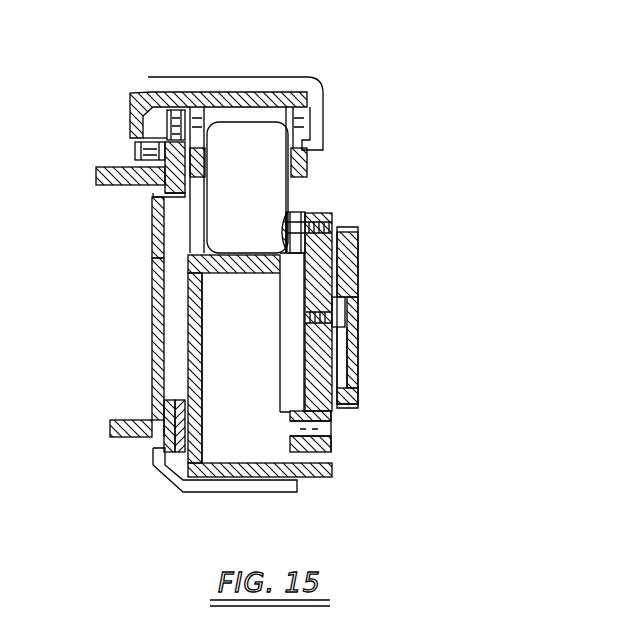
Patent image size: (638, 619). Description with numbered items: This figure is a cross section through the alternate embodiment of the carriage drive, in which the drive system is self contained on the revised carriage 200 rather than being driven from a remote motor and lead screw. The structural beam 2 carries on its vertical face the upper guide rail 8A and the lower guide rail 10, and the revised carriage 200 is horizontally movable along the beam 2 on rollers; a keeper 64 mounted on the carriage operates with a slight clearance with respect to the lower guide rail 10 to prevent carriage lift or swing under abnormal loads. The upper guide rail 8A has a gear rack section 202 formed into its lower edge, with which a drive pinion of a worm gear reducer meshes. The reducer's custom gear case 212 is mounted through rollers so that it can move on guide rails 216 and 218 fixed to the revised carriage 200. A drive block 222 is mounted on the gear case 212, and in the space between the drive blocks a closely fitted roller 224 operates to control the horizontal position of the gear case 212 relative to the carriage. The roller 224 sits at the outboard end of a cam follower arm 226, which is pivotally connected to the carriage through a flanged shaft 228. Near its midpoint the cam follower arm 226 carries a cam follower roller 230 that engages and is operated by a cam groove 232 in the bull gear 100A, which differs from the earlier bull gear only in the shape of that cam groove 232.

The revised carriage 200 is at (318, 80).
The guide rail 216 is at (207, 160).
The guide rail 218 is at (306, 165).
The gear case 212 is at (288, 192).
The drive block 222 is at (290, 202).
The cam follower arm 226 is at (332, 213).
The roller 224 is at (332, 255).
The cam follower roller 230 is at (347, 325).
The cam groove 232 is at (340, 365).
The bull gear 100A is at (358, 400).
The flanged shaft 228 is at (332, 430).
The upper guide rail 8A is at (163, 186).
The gear rack section 202 is at (168, 195).
The structural beam 2 is at (152, 330).
The lower guide rail 10 is at (168, 400).
The keeper 64 is at (170, 480).